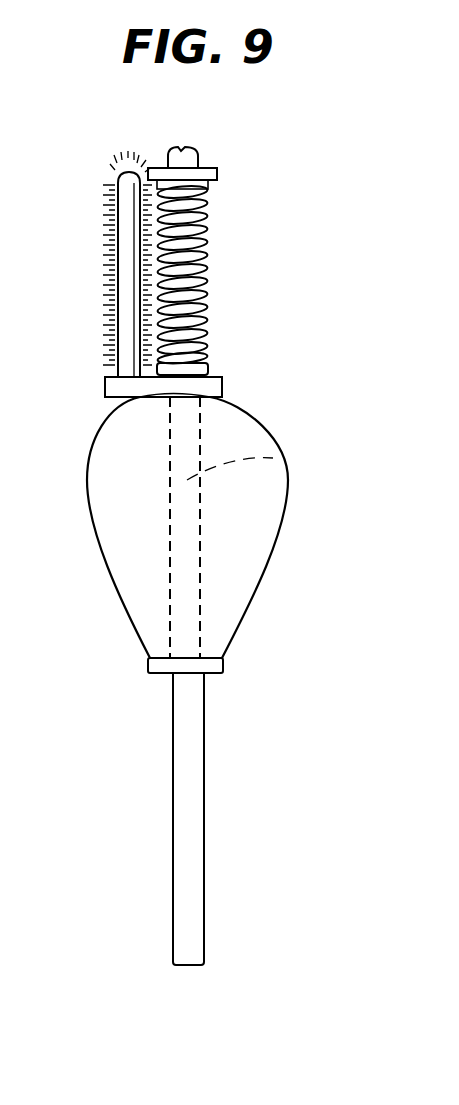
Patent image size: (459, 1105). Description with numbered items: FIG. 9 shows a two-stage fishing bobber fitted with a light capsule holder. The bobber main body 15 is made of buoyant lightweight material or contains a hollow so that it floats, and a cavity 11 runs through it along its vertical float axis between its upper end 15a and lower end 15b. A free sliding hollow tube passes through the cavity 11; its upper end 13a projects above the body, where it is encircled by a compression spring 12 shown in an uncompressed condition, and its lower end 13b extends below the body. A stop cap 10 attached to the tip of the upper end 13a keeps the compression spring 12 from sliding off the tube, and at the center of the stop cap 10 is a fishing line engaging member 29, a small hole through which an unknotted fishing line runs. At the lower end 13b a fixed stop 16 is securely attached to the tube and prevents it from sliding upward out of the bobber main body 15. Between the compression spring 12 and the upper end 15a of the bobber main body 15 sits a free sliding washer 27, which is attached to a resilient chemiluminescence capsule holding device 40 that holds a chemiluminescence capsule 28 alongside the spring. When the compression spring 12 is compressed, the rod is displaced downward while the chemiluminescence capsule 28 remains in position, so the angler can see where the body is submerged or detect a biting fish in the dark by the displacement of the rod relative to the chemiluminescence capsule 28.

The stop cap 10 is at (197, 156).
The cavity 11 is at (273, 458).
The compression spring 12 is at (208, 267).
The upper end of hollow tube 13a is at (183, 312).
The lower end of hollow tube 13b is at (192, 760).
The bobber main body 15 is at (247, 537).
The upper end of bobber main body 15a is at (183, 400).
The lower end of bobber main body 15b is at (185, 655).
The fixed stop 16 is at (213, 667).
The free sliding washer 27 is at (210, 385).
The chemiluminescence capsule 28 is at (128, 303).
The fishing line engaging member 29 is at (180, 147).
The chemiluminescence capsule holding device 40 is at (105, 387).